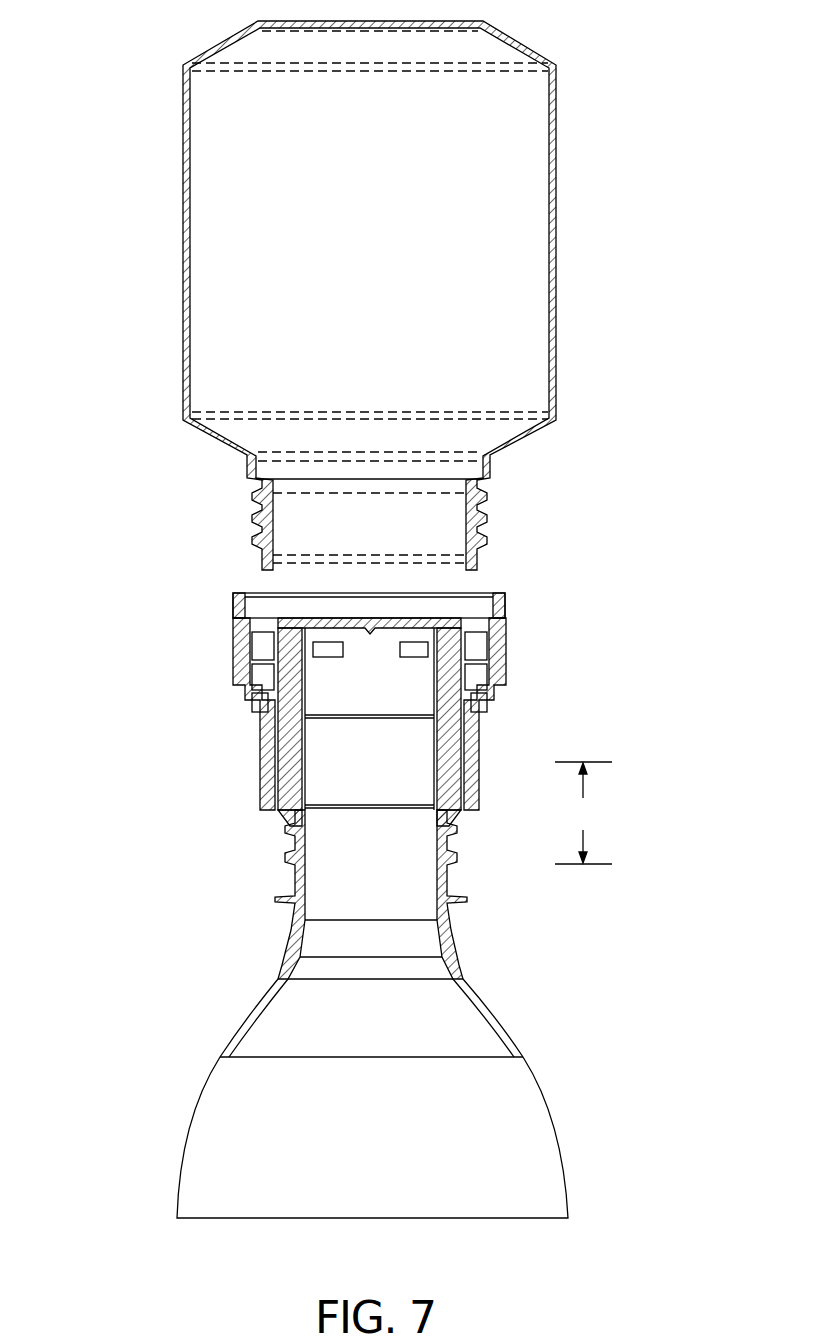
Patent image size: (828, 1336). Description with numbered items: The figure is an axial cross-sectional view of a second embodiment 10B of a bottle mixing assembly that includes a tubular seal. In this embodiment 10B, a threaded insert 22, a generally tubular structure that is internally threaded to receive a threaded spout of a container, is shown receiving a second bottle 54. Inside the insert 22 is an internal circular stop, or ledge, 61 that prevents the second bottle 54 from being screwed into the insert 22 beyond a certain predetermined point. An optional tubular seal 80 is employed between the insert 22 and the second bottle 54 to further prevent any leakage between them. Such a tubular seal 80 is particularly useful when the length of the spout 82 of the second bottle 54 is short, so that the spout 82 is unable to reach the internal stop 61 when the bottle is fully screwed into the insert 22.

The second embodiment 10B is at (168, 709).
The tubular seal 80 is at (265, 785).
The internal circular stop 61 is at (465, 744).
The spout 82 is at (583, 813).
The threaded insert 22 is at (470, 826).
The second bottle 54 is at (556, 1097).